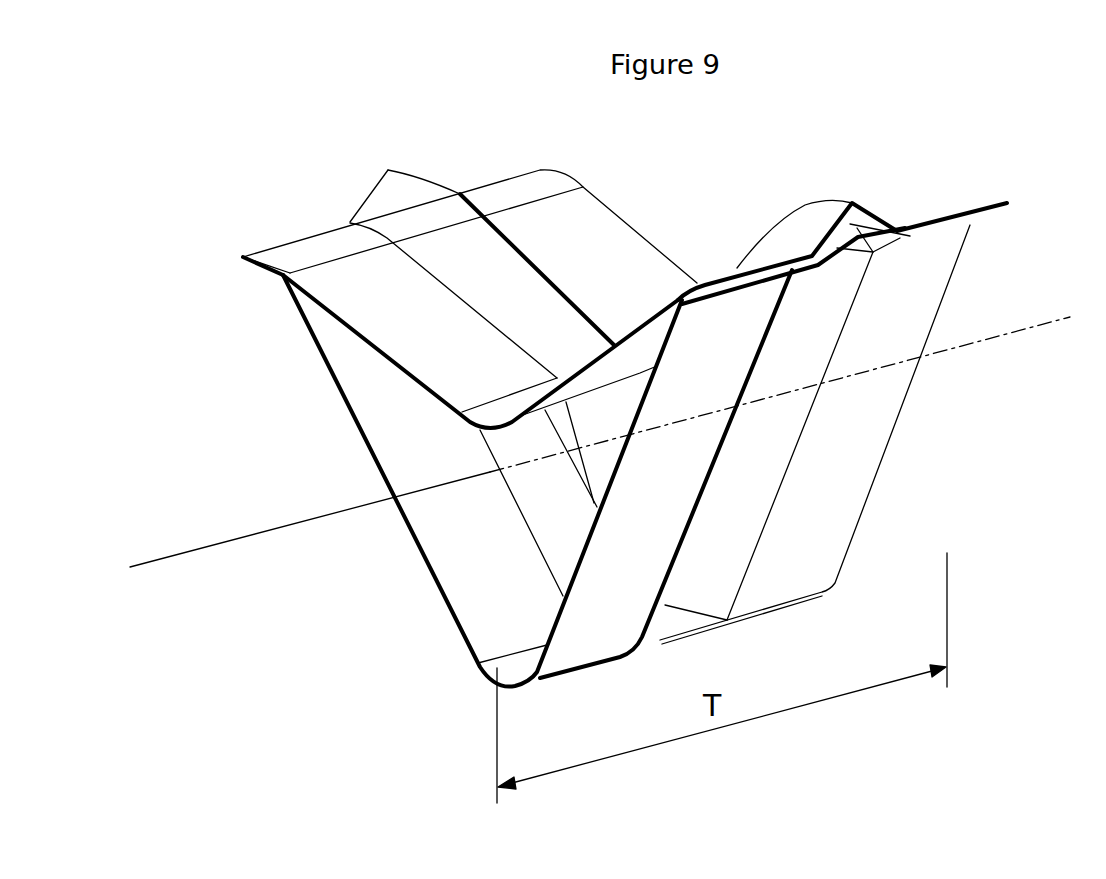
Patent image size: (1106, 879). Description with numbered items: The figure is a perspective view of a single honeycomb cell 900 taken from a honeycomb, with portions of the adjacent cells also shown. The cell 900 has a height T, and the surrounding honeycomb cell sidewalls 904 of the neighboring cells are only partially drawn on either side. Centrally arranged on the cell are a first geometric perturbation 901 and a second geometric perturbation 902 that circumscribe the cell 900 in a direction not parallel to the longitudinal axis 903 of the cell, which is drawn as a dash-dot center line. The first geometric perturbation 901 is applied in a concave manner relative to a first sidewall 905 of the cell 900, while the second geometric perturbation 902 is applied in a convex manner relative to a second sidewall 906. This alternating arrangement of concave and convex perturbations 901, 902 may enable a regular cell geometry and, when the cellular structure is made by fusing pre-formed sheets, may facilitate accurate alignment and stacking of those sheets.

The honeycomb cell 900 is at (459, 136).
The first geometric perturbation 901 is at (663, 625).
The second geometric perturbation 902 is at (390, 167).
The longitudinal axis 903 is at (600, 430).
The surrounding honeycomb cell sidewalls 904 is at (243, 258).
The first sidewall 905 is at (453, 525).
The second sidewall 906 is at (343, 282).